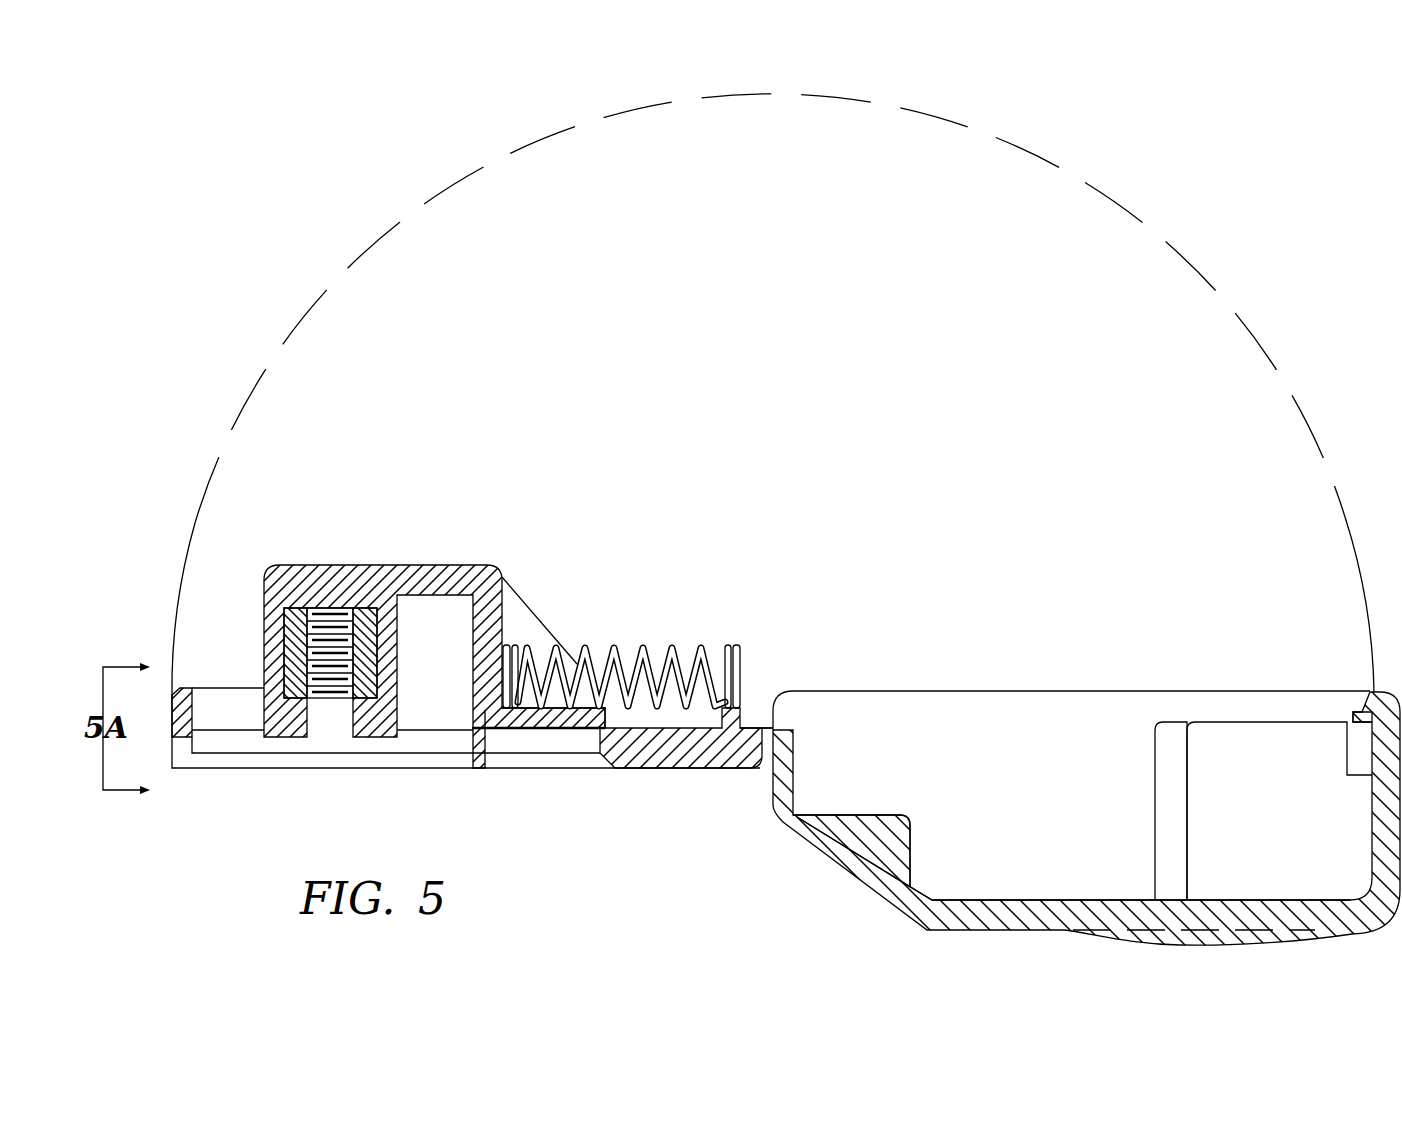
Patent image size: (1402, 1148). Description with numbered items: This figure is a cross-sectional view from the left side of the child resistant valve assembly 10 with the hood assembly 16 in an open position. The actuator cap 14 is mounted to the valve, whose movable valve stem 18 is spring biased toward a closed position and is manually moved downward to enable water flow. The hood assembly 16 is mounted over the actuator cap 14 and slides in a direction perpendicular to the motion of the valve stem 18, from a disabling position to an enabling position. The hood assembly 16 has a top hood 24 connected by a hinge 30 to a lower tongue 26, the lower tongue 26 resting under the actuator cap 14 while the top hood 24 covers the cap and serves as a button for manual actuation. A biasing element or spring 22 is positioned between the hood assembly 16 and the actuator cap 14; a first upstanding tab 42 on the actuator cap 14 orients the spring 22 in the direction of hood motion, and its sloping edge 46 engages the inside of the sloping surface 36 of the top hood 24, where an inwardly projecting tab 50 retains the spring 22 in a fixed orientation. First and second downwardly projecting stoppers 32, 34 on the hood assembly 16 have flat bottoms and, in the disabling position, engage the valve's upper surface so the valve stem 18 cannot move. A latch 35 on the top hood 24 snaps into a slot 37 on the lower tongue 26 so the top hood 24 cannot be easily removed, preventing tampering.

The child resistant valve assembly 10 is at (222, 608).
The actuator cap 14 is at (406, 565).
The hood assembly 16 is at (953, 931).
The valve stem 18 is at (289, 655).
The biasing element or spring 22 is at (642, 641).
The top hood 24 is at (1012, 938).
The lower tongue 26 is at (662, 772).
The hinge 30 is at (765, 731).
The first stopper 32 is at (1175, 722).
The second stopper 34 is at (1287, 722).
The latch 35 is at (1357, 708).
The sloping surface 36 is at (833, 868).
The slot 37 is at (183, 760).
The first upstanding tab 42 is at (529, 630).
The sloping edge 46 is at (521, 596).
The inwardly projecting tab 50 is at (863, 827).